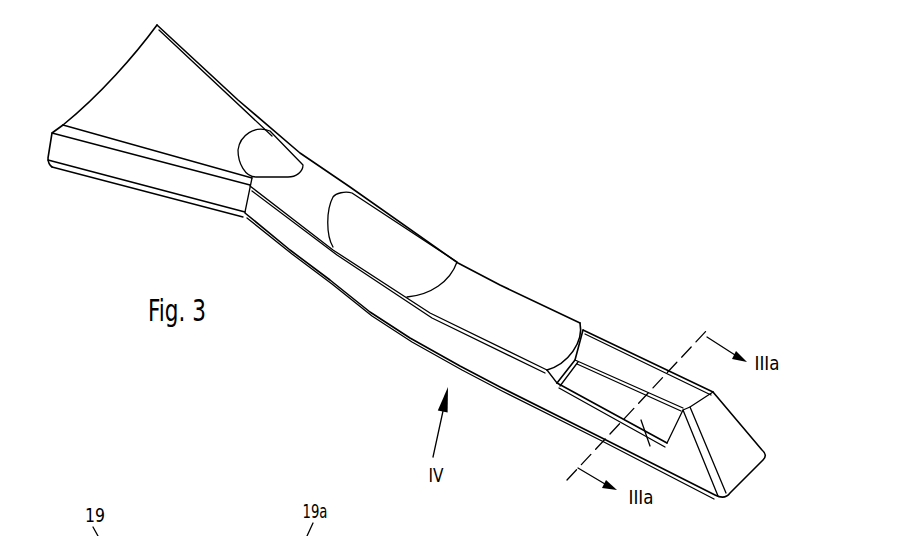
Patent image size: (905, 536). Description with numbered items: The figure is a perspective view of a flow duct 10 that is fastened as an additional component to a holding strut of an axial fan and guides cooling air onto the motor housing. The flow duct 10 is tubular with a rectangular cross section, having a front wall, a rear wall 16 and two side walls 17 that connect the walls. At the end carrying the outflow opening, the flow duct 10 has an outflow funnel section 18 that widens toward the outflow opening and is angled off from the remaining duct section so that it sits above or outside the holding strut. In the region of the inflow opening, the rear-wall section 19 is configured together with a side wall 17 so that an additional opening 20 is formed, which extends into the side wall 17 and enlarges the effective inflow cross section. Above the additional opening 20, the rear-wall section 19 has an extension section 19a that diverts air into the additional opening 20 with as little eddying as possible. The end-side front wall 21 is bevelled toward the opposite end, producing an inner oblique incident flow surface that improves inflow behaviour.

The flow duct 10 is at (348, 184).
The rear wall 16 is at (502, 298).
The side walls 17 is at (382, 311).
The outflow funnel section 18 is at (177, 80).
The rear-wall section 19 is at (637, 354).
The extension section 19a is at (669, 476).
The additional opening 20 is at (590, 408).
The end-side front wall 21 is at (737, 447).